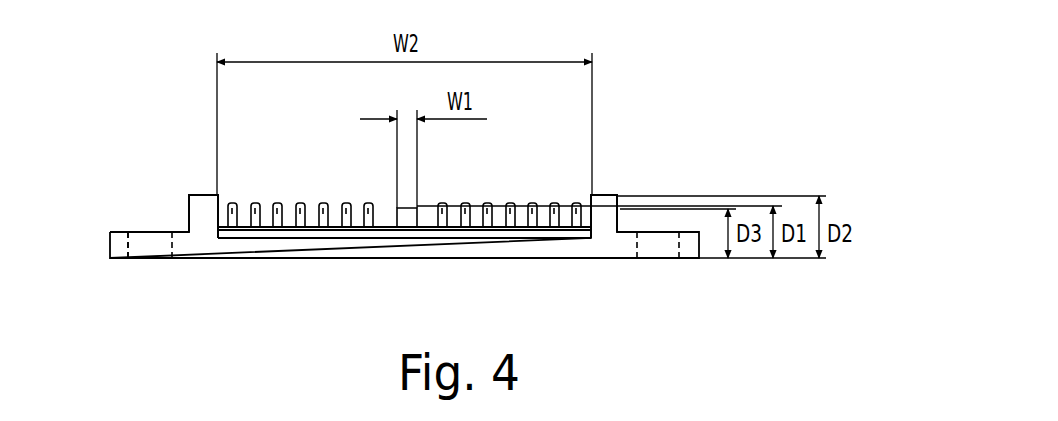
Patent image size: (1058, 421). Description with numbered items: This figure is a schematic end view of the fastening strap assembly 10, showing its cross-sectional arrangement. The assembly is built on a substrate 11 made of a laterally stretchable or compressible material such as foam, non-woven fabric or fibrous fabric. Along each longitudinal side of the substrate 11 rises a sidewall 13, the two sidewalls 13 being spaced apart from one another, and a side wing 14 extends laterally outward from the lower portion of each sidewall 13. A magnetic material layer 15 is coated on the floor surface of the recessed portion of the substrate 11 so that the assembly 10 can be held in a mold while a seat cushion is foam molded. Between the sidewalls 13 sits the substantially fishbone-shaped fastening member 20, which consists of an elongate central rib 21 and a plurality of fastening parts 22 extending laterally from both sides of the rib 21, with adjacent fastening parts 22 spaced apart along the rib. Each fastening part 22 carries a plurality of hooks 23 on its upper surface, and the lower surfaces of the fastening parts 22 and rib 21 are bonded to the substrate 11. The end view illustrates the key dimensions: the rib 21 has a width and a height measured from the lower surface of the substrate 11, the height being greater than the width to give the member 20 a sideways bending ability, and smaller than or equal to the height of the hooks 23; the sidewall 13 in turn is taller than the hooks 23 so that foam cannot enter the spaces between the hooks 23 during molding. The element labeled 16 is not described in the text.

The fastening strap assembly 10 is at (681, 103).
The substrate 11 is at (245, 250).
The sidewalls 13 is at (190, 193).
The side wings 14 is at (120, 253).
The magnetic material layer 15 is at (300, 237).
The recess 16 is at (133, 232).
The fastening member 20 is at (321, 175).
The central rib 21 is at (405, 228).
The fastening parts 22 is at (350, 232).
The hooks 23 is at (487, 233).